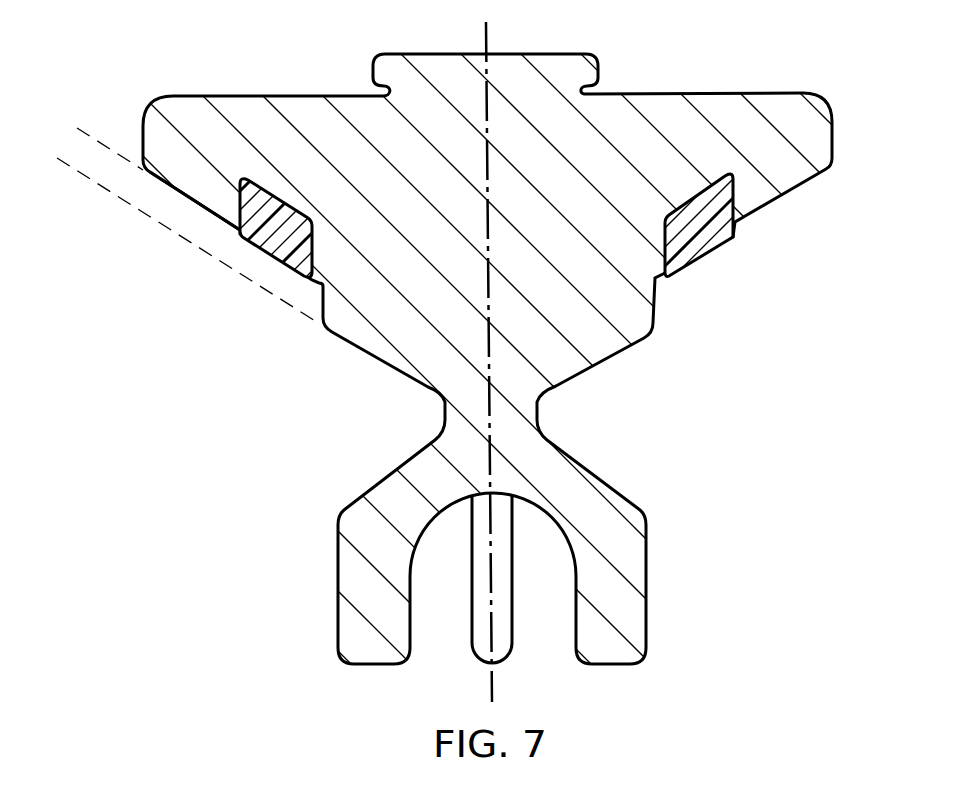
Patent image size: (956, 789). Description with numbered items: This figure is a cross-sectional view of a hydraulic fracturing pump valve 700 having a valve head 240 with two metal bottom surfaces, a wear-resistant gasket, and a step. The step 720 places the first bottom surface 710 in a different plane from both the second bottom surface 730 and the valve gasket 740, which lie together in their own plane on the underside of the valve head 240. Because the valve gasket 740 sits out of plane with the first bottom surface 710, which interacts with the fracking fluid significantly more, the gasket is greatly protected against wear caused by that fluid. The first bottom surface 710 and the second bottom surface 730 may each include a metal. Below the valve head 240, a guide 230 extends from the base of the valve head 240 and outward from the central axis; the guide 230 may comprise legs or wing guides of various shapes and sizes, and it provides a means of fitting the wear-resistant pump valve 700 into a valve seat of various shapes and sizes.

The pump valve 700 is at (478, 357).
The first bottom surface 710 is at (370, 353).
The step 720 is at (87, 128).
The second bottom surface 730 is at (207, 211).
The valve gasket 740 is at (273, 257).
The valve head 240 is at (448, 217).
The guide 230 is at (347, 568).